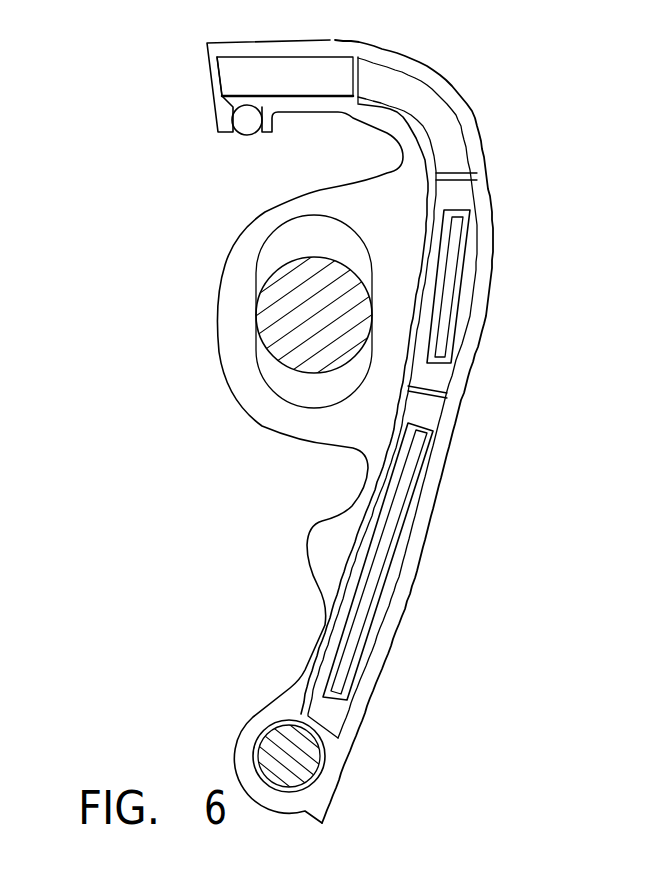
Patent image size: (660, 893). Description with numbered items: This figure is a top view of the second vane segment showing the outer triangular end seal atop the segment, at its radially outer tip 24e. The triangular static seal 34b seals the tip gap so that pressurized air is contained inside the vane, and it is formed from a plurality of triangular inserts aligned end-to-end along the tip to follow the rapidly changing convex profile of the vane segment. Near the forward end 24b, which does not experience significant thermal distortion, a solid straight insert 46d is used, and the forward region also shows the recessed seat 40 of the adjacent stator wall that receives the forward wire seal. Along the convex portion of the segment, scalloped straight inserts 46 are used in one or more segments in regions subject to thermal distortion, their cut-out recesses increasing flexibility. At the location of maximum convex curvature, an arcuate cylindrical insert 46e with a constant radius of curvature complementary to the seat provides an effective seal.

The forward end 24b is at (243, 40).
The tip 24e is at (490, 200).
The triangular static seal 34b is at (450, 431).
The recessed seat 40 is at (242, 136).
The triangular insert 46 is at (448, 343).
The solid straight triangular insert 46d is at (336, 41).
The arcuate triangular insert 46e is at (433, 84).